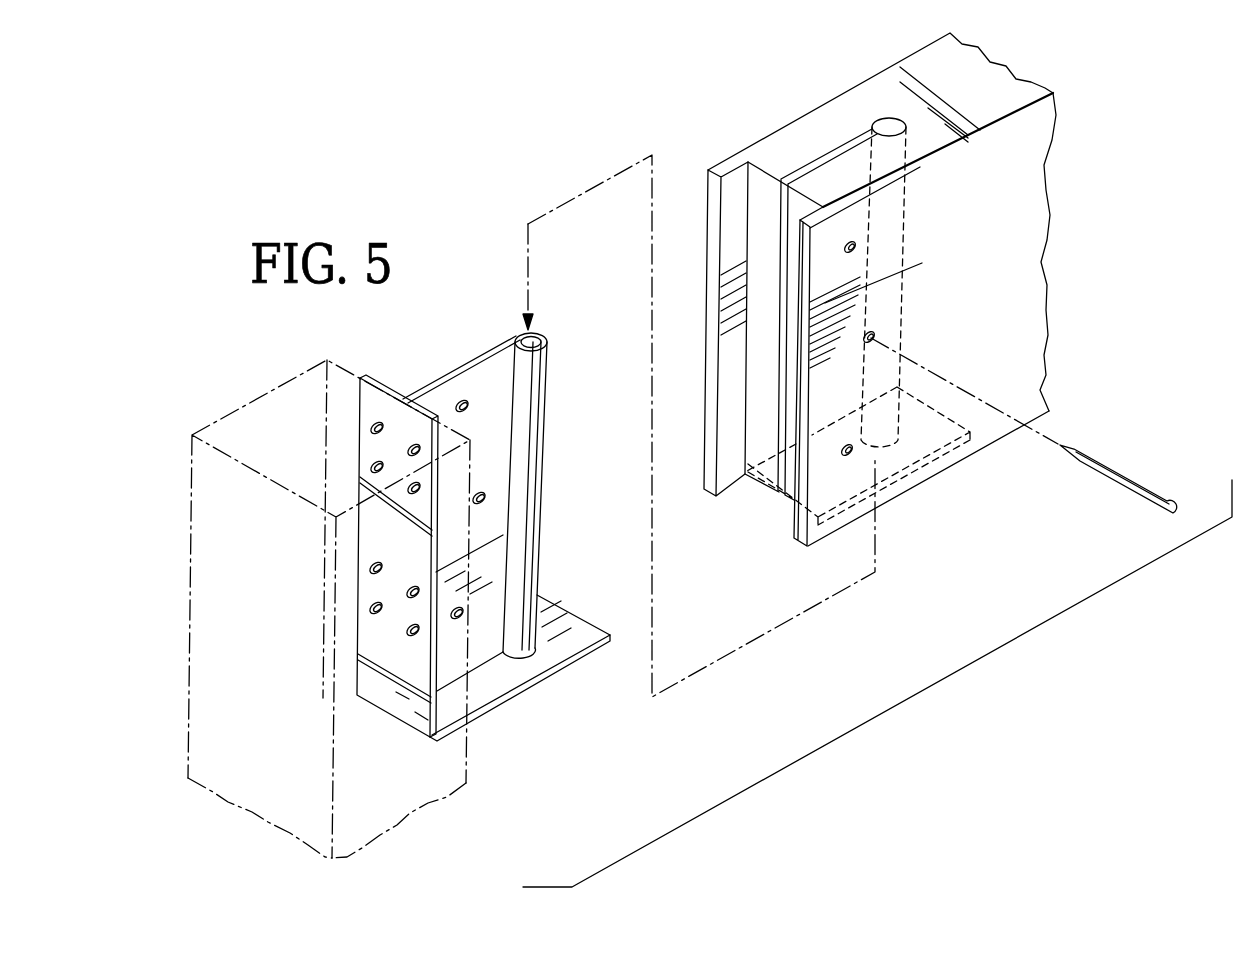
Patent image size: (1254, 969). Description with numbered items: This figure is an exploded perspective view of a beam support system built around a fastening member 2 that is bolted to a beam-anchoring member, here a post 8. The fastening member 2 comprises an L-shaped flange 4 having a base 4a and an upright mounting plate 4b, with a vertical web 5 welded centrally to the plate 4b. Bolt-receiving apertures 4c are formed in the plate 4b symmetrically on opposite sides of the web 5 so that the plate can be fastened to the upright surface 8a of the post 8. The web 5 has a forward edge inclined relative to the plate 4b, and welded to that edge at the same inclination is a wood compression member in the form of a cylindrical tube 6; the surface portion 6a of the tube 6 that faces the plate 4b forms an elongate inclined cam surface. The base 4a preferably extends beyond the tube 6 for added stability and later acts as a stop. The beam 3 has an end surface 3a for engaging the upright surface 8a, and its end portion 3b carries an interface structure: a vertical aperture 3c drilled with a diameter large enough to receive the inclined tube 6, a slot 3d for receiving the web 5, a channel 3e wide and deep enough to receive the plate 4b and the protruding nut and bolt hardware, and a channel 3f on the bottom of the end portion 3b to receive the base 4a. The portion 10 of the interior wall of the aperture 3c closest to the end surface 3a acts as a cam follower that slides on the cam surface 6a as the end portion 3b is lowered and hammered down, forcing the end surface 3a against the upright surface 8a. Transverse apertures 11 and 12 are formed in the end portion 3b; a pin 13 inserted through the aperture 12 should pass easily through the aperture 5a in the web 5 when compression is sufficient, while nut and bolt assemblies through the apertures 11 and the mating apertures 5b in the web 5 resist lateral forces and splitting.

The fastening member 2 is at (458, 338).
The beam 3 is at (1020, 165).
The end surface 3a is at (706, 492).
The end portion 3b is at (778, 157).
The vertical aperture 3c is at (883, 124).
The slot 3d is at (827, 157).
The channel 3e is at (757, 202).
The channel 3f is at (788, 498).
The L-shaped flange 4 is at (527, 688).
The base 4a is at (572, 627).
The upright mounting plate 4b is at (372, 640).
The bolt-receiving apertures 4c is at (371, 608).
The vertical web 5 is at (443, 390).
The aperture 5a is at (486, 500).
The mating apertures 5b is at (468, 407).
The cylindrical tube 6 is at (540, 488).
The cam surface 6a is at (510, 458).
The post 8 is at (232, 412).
The upright surface 8a is at (468, 745).
The portion of interior wall 10 is at (893, 436).
The transverse apertures 11 is at (857, 248).
The transverse aperture 12 is at (875, 336).
The pin 13 is at (1144, 487).